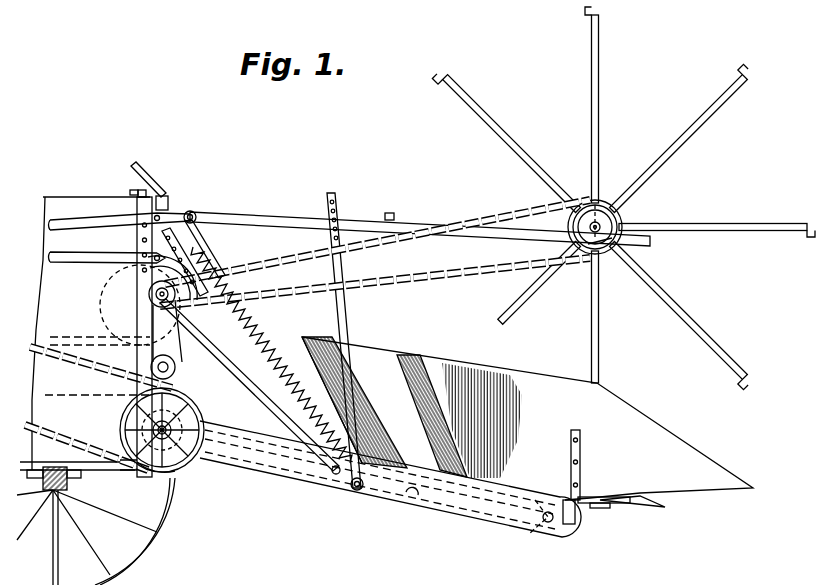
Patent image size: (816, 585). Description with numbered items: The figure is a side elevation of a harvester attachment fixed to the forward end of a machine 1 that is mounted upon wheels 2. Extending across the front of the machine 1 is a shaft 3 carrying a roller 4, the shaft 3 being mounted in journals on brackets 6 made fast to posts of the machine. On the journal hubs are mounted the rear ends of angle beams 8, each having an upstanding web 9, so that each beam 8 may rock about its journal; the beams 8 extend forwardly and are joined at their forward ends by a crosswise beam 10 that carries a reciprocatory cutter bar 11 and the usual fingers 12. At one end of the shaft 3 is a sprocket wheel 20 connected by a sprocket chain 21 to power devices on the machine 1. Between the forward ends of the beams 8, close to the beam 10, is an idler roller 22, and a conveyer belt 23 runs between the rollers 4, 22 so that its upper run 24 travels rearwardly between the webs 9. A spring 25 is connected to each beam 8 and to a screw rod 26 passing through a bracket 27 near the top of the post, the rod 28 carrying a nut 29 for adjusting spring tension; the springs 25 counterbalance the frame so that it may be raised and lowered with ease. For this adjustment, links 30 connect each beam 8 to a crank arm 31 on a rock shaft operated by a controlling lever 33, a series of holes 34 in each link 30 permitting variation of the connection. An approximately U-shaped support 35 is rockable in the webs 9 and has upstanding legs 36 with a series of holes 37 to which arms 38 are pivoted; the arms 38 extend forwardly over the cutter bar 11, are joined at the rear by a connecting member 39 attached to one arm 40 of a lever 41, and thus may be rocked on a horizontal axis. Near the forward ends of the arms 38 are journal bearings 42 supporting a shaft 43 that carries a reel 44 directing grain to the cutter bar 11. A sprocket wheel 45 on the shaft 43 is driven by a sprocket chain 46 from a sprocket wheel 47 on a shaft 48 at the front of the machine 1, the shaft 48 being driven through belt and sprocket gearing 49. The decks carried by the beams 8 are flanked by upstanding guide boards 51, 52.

The machine 1 is at (47, 198).
The wheels 2 is at (145, 563).
The shaft 3 is at (175, 455).
The roller 4 is at (190, 453).
The brackets 6 is at (137, 464).
The beams 8 is at (390, 488).
The web 9 is at (268, 446).
The beam 10 is at (571, 525).
The reciprocatory cutter bar 11 is at (601, 504).
The fingers 12 is at (652, 503).
The sprocket wheel 20 is at (153, 478).
The sprocket chain 21 is at (68, 446).
The roller 22 is at (515, 530).
The conveyer belt 23 is at (412, 498).
The upper run 24 is at (472, 492).
The spring 25 is at (289, 362).
The screw rod 26 is at (420, 213).
The bracket 27 is at (164, 196).
The rod 28 is at (148, 167).
The nut 29 is at (145, 192).
The links 30 is at (272, 382).
The crank arm 31 is at (166, 249).
The controlling lever 33 is at (63, 264).
The series of holes 34 is at (192, 240).
The U-shaped support 35 is at (355, 492).
The upstanding legs 36 is at (360, 354).
The series of holes 37 is at (340, 201).
The arm 38 is at (390, 212).
The connecting member 39 is at (193, 211).
The arm 40 is at (176, 212).
The lever 41 is at (76, 221).
The journal bearings 42 is at (600, 222).
The shaft 43 is at (610, 256).
The reel 44 is at (677, 148).
The sprocket wheel 45 is at (623, 224).
The sprocket chain 46 is at (476, 285).
The sprocket wheel 47 is at (185, 316).
The shaft 48 is at (152, 298).
The belt and sprocket gearing 49 is at (187, 344).
The guide board 51 is at (527, 418).
The guide board 52 is at (405, 356).